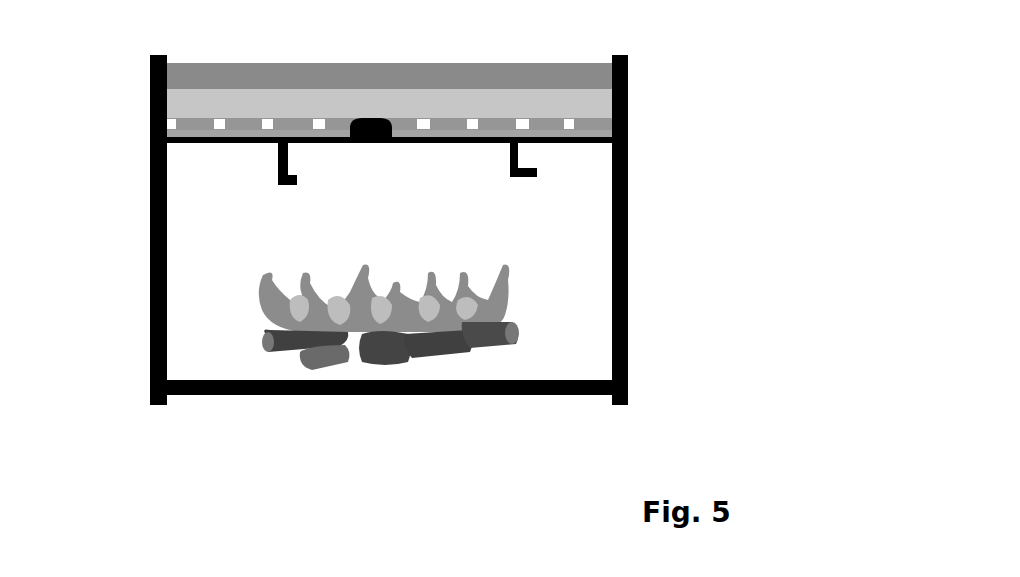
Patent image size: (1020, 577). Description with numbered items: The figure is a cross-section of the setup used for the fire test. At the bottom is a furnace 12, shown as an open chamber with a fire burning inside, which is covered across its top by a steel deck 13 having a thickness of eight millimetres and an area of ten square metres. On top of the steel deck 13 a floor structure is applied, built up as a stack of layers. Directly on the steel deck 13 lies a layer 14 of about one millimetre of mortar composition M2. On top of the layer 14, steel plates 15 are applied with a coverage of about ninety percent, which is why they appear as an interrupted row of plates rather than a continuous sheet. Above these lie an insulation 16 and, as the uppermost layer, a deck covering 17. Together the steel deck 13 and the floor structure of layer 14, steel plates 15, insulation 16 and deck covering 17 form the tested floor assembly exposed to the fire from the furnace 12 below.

The furnace 12 is at (150, 309).
The steel deck 13 is at (576, 143).
The layer of mortar composition 14 is at (209, 135).
The steel plates 15 is at (191, 125).
The insulation 16 is at (594, 107).
The deck covering 17 is at (576, 78).